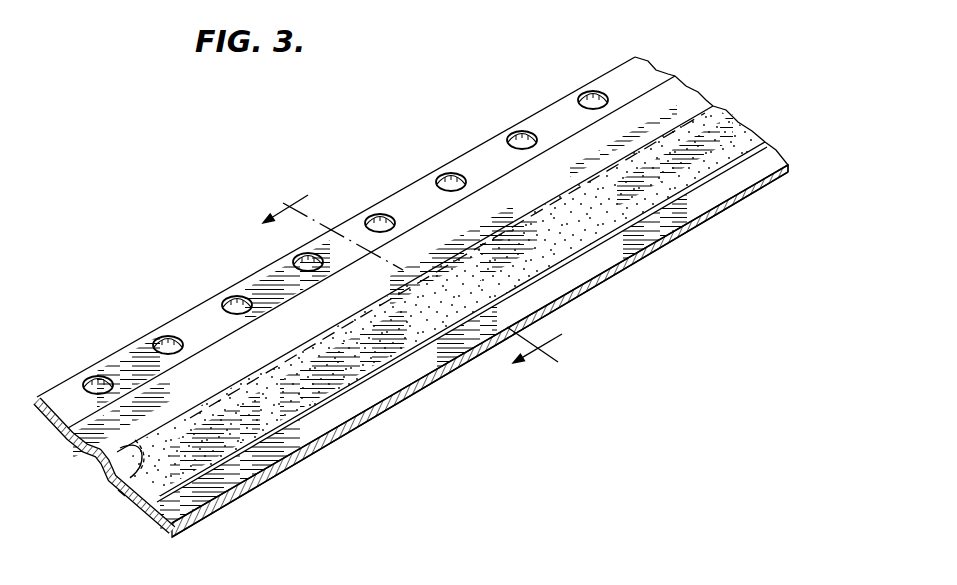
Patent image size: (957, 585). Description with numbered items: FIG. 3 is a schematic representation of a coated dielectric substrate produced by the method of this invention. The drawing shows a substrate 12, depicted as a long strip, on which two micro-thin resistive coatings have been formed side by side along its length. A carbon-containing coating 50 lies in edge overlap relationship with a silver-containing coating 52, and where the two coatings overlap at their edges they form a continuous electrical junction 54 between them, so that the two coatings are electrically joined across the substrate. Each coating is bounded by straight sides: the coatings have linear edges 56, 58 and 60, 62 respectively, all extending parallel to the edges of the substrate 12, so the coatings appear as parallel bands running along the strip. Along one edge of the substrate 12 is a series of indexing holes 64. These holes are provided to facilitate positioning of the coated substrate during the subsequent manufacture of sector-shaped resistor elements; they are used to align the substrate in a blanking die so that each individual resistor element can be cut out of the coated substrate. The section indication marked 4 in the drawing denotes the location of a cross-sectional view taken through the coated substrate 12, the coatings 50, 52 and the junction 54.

The substrate 12 is at (202, 500).
The carbon-containing coating 50 is at (610, 218).
The silver-containing coating 52 is at (502, 188).
The continuous electrical junction 54 is at (87, 460).
The linear edge 56 is at (148, 383).
The linear edge 58 is at (117, 502).
The linear edge 60 is at (110, 480).
The linear edge 62 is at (273, 430).
The indexing holes 64 is at (593, 93).
The section line 4- 4 is at (407, 291).